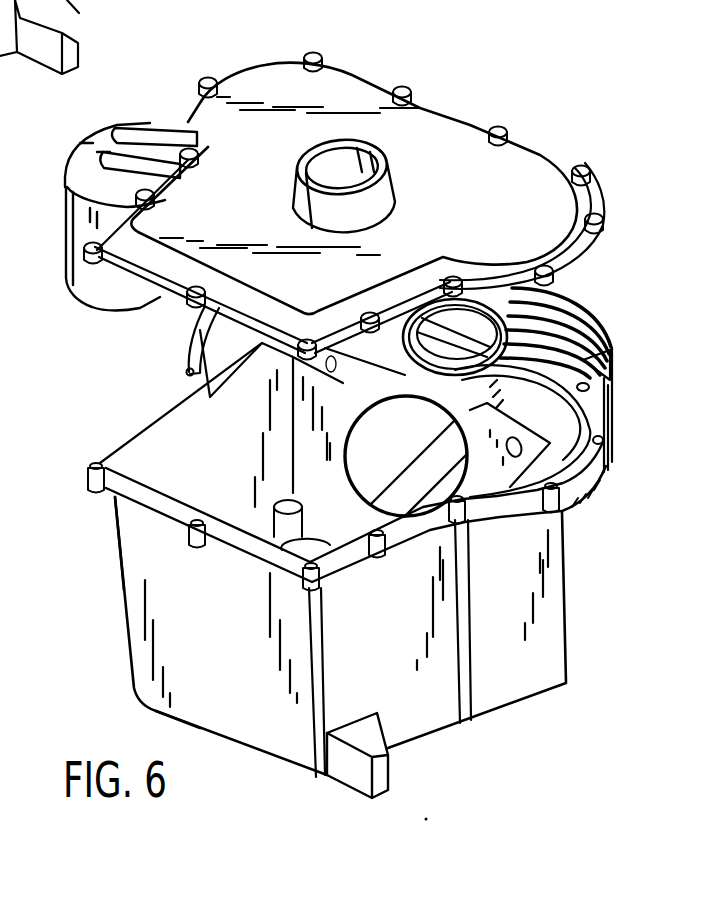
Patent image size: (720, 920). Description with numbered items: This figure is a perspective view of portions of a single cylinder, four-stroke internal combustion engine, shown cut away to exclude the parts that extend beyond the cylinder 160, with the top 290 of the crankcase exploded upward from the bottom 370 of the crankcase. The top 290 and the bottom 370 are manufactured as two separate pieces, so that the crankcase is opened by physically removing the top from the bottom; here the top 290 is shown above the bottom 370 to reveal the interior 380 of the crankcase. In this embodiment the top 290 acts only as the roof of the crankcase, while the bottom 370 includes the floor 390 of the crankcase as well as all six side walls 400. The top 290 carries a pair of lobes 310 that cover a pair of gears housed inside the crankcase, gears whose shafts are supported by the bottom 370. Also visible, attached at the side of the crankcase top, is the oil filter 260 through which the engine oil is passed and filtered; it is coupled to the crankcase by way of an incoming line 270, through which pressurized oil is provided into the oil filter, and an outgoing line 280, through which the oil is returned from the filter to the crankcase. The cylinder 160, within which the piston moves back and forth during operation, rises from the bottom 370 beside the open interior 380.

The cylinder 160 is at (590, 312).
The oil filter 260 is at (90, 294).
The incoming line 270 is at (162, 132).
The outgoing line 280 is at (68, 196).
The top of the crankcase 290 is at (522, 153).
The lobes 310 is at (343, 68).
The bottom of the crankcase 370 is at (572, 675).
The interior of the crankcase 380 is at (185, 411).
The floor of the crankcase 390 is at (148, 711).
The side walls 400 is at (122, 590).